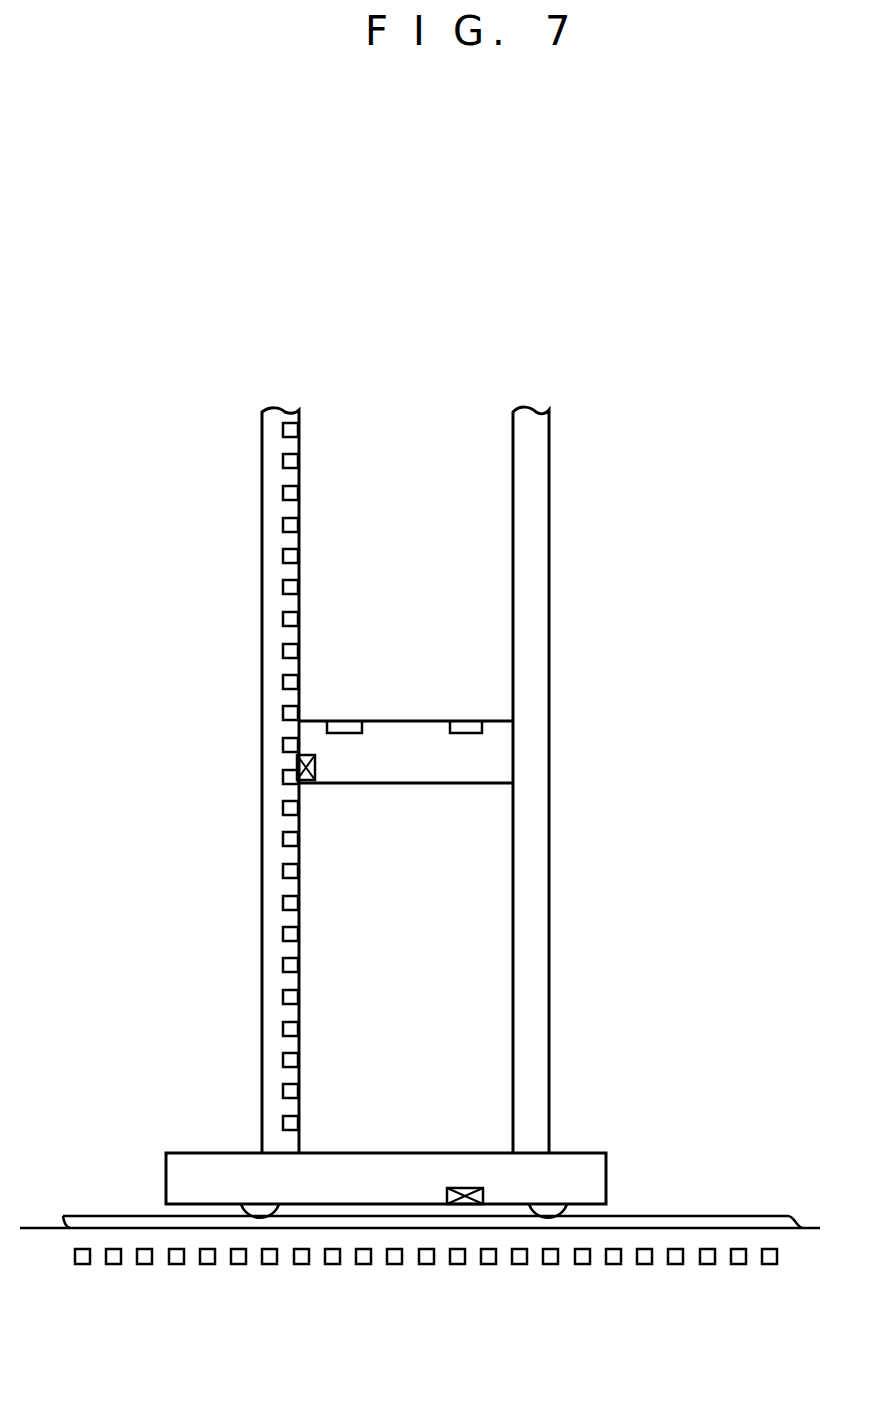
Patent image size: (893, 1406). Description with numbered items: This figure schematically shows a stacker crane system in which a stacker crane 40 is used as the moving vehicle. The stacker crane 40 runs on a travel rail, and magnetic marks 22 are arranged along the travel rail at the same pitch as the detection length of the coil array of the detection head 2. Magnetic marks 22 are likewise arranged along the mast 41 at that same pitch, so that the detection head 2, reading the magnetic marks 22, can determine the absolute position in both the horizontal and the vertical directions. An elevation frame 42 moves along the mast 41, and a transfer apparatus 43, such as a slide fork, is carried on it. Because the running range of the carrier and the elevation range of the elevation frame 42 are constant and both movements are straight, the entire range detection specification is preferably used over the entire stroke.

The detection head 2 is at (316, 765).
The magnetic marks 22 is at (299, 588).
The stacker crane 40 is at (610, 1173).
The mast 41 is at (271, 800).
The elevation frame 42 is at (432, 774).
The transfer apparatus 43 is at (350, 721).